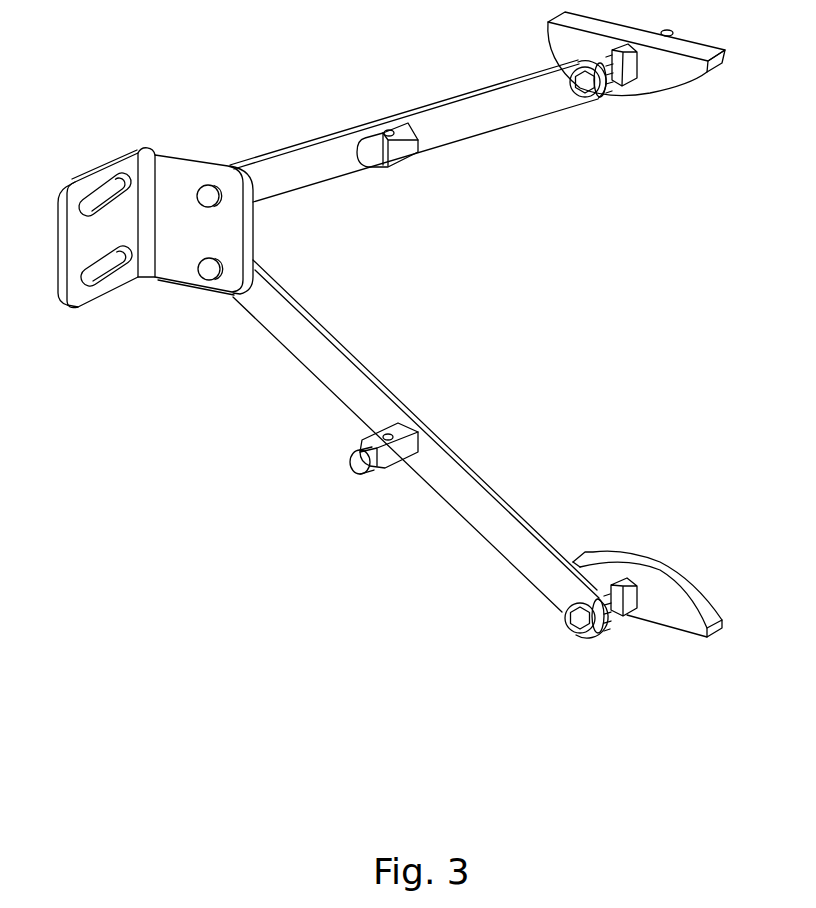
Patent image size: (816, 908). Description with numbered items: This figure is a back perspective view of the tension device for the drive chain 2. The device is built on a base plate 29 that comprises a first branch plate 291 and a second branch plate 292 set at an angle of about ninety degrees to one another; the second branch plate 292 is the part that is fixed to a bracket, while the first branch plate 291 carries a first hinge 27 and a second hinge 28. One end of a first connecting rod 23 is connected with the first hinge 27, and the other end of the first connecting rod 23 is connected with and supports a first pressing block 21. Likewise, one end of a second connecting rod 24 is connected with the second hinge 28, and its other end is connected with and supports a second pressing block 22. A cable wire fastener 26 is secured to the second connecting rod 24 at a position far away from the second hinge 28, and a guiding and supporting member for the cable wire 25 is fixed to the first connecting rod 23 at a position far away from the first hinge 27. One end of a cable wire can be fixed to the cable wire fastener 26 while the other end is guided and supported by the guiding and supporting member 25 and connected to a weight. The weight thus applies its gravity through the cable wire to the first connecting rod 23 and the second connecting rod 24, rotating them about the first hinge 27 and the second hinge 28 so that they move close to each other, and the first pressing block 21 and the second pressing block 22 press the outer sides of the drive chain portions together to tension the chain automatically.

The tension device for the drive chain 2 is at (505, 297).
The first pressing block 21 is at (658, 83).
The second pressing block 22 is at (647, 590).
The first connecting rod 23 is at (460, 125).
The second connecting rod 24 is at (460, 493).
The guiding and supporting member for the cable wire 25 is at (388, 148).
The cable wire fastener 26 is at (392, 447).
The first hinge 27 is at (215, 200).
The second hinge 28 is at (207, 270).
The base plate 29 is at (140, 157).
The first branch plate 291 is at (182, 170).
The second branch plate 292 is at (83, 250).